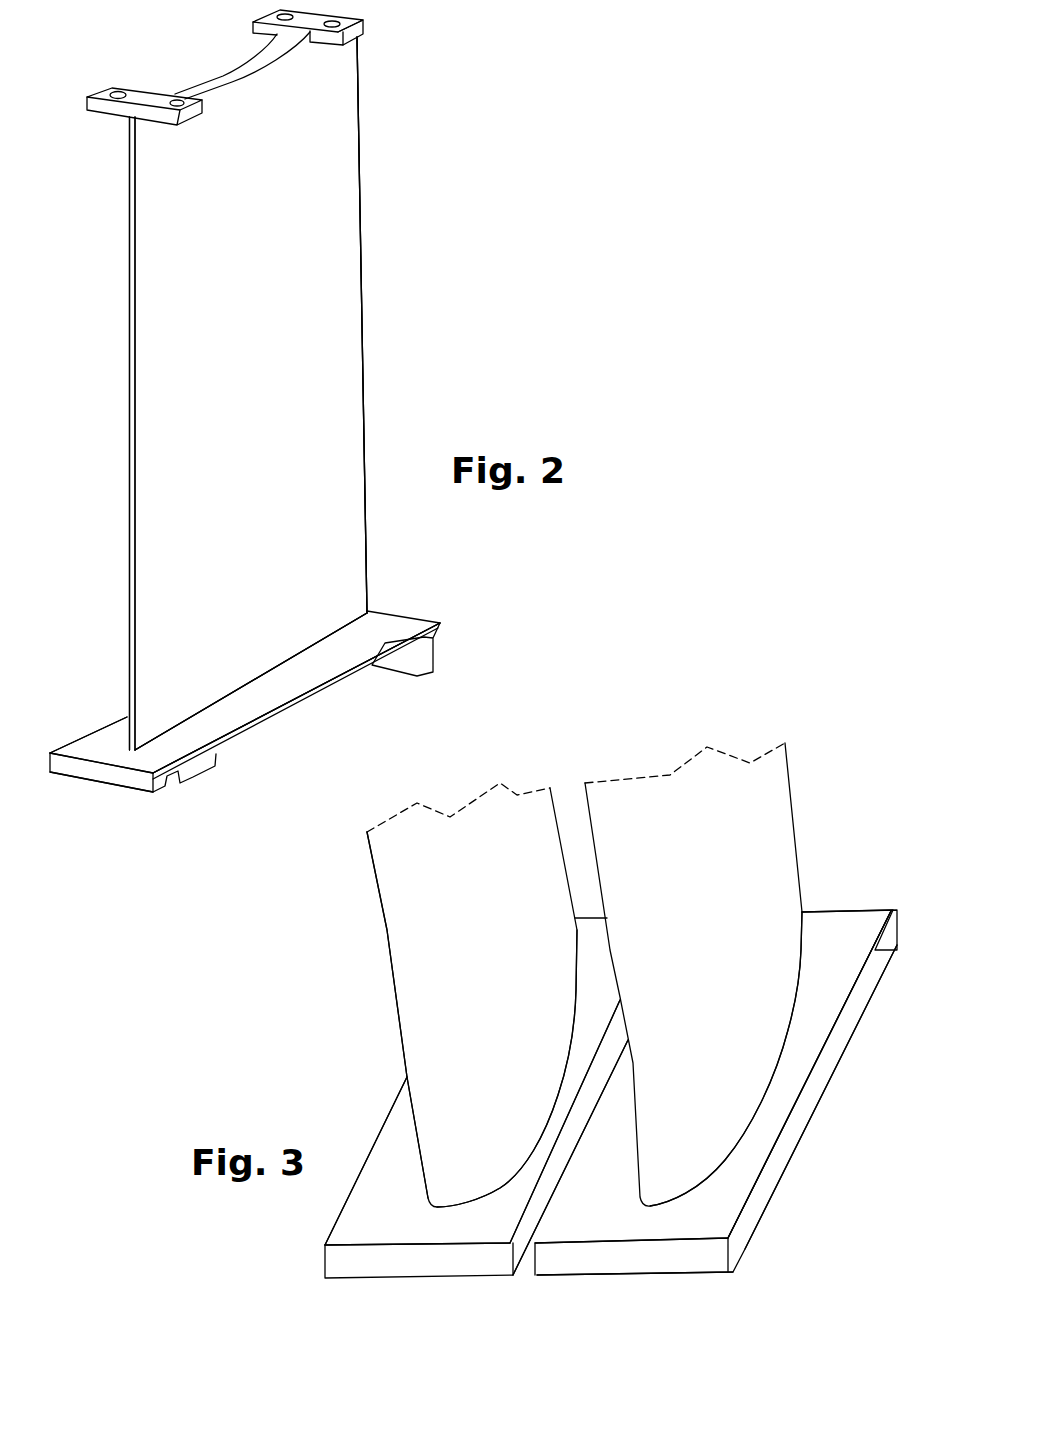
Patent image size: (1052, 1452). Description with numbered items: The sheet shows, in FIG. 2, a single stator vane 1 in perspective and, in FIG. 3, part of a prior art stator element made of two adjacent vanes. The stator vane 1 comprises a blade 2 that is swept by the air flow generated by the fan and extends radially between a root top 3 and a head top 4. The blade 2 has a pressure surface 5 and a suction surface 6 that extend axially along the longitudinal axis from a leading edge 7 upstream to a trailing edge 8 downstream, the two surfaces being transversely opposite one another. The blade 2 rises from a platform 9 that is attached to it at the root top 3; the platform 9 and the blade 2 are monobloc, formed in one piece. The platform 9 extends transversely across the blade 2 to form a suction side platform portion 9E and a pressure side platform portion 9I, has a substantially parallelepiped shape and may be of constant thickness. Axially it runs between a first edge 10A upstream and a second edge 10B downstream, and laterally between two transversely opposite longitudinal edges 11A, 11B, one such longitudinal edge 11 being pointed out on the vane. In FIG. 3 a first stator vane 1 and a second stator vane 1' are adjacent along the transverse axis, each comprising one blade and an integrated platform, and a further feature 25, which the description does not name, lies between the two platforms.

In FIG. 2, the stator vane 1 is at (302, 50).
In FIG. 3, the stator vane 1 is at (693, 919).
In FIG. 3, the second stator vane 1' is at (487, 956).
In FIG. 2, the blade 2 is at (317, 193).
In FIG. 2, the root top 3 is at (327, 580).
In FIG. 2, the head top 4 is at (137, 147).
In FIG. 2, the pressure surface 5 is at (303, 118).
In FIG. 3, the pressure surface 5 is at (387, 962).
In FIG. 3, the suction surface 6 is at (505, 857).
In FIG. 2, the leading edge 7 is at (128, 377).
In FIG. 2, the trailing edge 8 is at (362, 367).
In FIG. 2, the platform 9 is at (75, 753).
In FIG. 3, the platform 9 is at (908, 913).
In FIG. 2, the suction side platform portion 9E is at (90, 747).
In FIG. 3, the suction side platform portion 9E is at (493, 1213).
In FIG. 2, the pressure side platform portion 9I is at (233, 715).
In FIG. 3, the pressure side platform portion 9I is at (400, 1112).
In FIG. 2, the first edge 10A is at (113, 773).
In FIG. 3, the first edge 10A is at (633, 1258).
In FIG. 3, the second edge 10B is at (866, 907).
In FIG. 2, the rail 11 is at (398, 615).
In FIG. 2, the longitudinal edge 11A is at (313, 697).
In FIG. 3, the longitudinal edge 11A is at (325, 1262).
In FIG. 2, the longitudinal edge 11B is at (103, 723).
In FIG. 3, the longitudinal edge 11B is at (518, 1250).
In FIG. 3, the groove 25 is at (587, 1173).